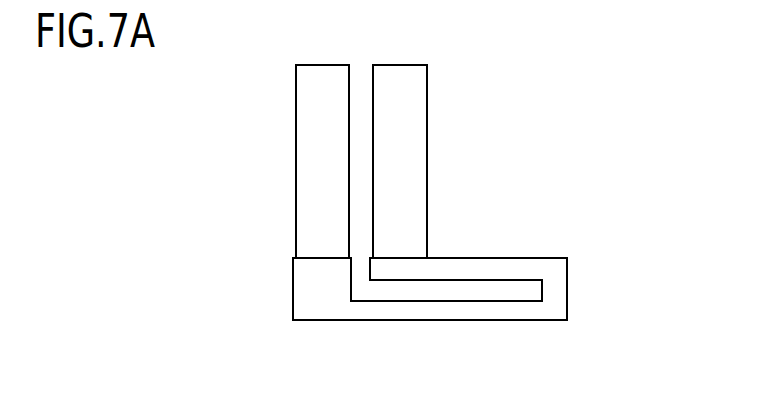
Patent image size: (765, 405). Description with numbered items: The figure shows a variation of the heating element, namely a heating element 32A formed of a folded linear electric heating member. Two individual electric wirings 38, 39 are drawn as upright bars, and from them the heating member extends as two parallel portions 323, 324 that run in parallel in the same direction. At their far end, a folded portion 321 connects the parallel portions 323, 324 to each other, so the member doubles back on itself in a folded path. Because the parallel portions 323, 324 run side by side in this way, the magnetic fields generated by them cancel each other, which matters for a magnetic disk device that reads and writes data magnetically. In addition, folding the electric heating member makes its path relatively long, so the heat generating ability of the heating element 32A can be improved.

The electric wiring 39 is at (308, 112).
The electric wiring 38 is at (408, 112).
The folded portion 321 is at (555, 290).
The parallel portion 323 is at (490, 270).
The parallel portion 324 is at (480, 310).
The heating element 32A is at (606, 329).